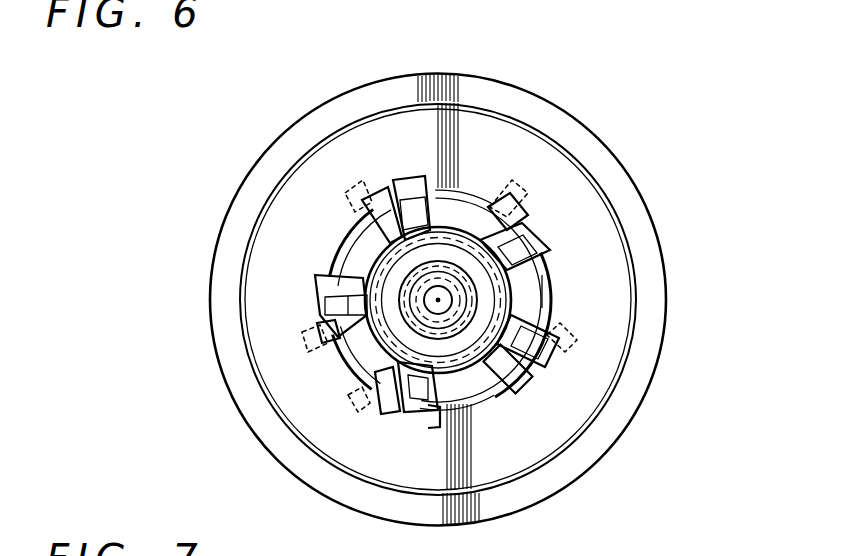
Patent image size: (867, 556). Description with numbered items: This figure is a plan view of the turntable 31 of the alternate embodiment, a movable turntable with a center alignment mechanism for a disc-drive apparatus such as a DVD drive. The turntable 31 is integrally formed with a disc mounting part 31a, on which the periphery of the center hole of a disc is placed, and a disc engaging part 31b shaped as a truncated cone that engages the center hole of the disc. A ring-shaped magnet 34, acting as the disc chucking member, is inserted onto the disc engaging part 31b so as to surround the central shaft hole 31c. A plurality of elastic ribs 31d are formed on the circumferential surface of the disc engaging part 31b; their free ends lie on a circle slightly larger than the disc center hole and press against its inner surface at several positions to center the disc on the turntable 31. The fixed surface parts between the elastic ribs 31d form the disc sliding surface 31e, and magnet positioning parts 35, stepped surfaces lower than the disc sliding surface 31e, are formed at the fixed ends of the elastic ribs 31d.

The turntable 31 is at (633, 116).
The disc mounting part 31a is at (621, 188).
The disc engaging part 31b is at (340, 273).
The central shaft hole 31c is at (447, 288).
The elastic ribs 31d is at (315, 292).
The disc sliding surface 31e is at (527, 292).
The ring-shaped magnet 34 is at (463, 343).
The magnet positioning parts 35 is at (345, 252).